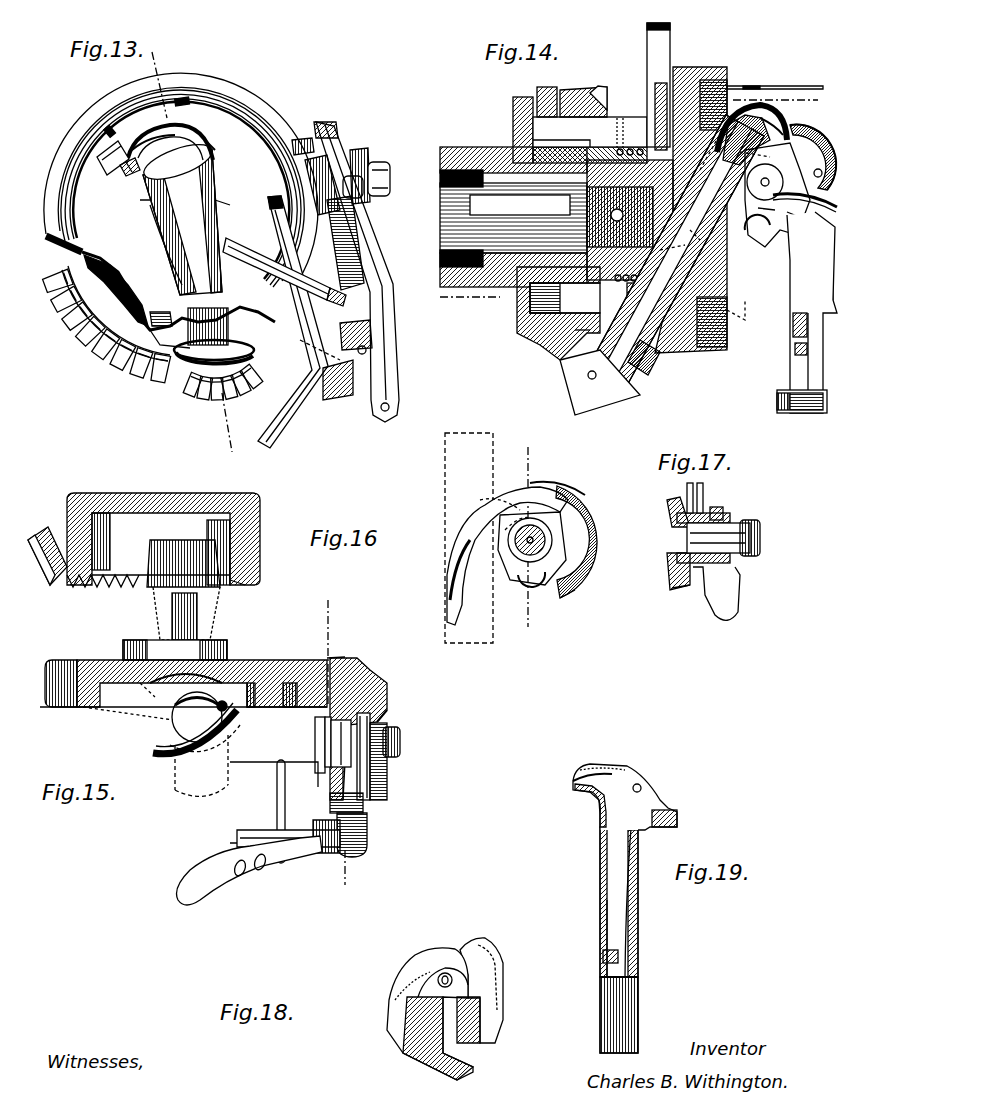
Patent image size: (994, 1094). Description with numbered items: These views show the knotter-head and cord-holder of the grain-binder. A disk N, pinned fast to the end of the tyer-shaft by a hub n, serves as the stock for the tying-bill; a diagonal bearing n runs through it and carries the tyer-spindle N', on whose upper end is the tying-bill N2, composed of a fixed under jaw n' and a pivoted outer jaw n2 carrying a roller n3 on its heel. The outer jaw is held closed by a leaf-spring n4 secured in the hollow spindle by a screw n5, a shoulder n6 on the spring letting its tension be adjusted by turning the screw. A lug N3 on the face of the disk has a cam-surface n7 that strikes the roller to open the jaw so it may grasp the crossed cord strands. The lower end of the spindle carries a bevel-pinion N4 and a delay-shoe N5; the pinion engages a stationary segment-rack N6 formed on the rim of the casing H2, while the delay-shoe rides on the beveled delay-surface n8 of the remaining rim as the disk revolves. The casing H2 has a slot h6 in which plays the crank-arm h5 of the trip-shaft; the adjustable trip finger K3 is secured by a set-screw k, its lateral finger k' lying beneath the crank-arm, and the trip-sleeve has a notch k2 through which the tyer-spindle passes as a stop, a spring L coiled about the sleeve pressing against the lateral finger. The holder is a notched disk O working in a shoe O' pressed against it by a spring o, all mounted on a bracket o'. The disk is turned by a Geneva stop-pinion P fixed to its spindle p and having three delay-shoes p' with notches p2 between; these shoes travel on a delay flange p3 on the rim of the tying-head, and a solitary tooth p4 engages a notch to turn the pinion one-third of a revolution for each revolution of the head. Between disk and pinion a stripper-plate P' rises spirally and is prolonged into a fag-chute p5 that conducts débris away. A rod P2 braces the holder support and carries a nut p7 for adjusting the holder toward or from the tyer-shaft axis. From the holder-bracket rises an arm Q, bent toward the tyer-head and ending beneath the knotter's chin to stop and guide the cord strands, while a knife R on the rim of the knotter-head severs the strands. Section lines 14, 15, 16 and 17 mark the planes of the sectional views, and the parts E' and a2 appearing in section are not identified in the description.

In FIG. 13, the section line 14 is at (120, 80).
In FIG. 14, the section line 15 is at (800, 92).
In FIG. 15, the section line 16 is at (302, 623).
In FIG. 16, the section line 17 is at (550, 455).
In FIG. 13, the disk N is at (186, 192).
In FIG. 14, the disk N is at (622, 206).
In FIG. 15, the disk N is at (186, 675).
In FIG. 15, the tyer-spindle N' is at (175, 637).
In FIG. 19, the tyer-spindle N' is at (632, 940).
In FIG. 13, the tying-bill N2 is at (172, 156).
In FIG. 14, the tying-bill N2 is at (743, 137).
In FIG. 15, the tying-bill N2 is at (199, 717).
In FIG. 19, the tying-bill N2 is at (640, 776).
In FIG. 13, the lug N3 is at (105, 168).
In FIG. 15, the lug N3 is at (140, 714).
In FIG. 13, the bevel-pinion N4 is at (248, 370).
In FIG. 14, the bevel-pinion N4 is at (662, 265).
In FIG. 15, the bevel-pinion N4 is at (147, 597).
In FIG. 13, the delay-shoe N5 is at (240, 345).
In FIG. 14, the delay-shoe N5 is at (645, 362).
In FIG. 13, the segment-rack N6 is at (106, 329).
In FIG. 14, the segment-rack N6 is at (588, 336).
In FIG. 15, the segment-rack N6 is at (83, 565).
In FIG. 13, the hub n is at (182, 222).
In FIG. 15, the hub n is at (186, 688).
In FIG. 13, the fixed under jaw n' is at (132, 167).
In FIG. 14, the fixed under jaw n' is at (755, 159).
In FIG. 15, the fixed under jaw n' is at (183, 728).
In FIG. 13, the pivoted outer jaw n2 is at (140, 145).
In FIG. 14, the pivoted outer jaw n2 is at (778, 124).
In FIG. 15, the pivoted outer jaw n2 is at (205, 760).
In FIG. 19, the pivoted outer jaw n2 is at (595, 766).
In FIG. 13, the roller n3 is at (210, 148).
In FIG. 19, the roller n3 is at (678, 815).
In FIG. 14, the leaf-spring n4 is at (682, 258).
In FIG. 19, the leaf-spring n4 is at (628, 900).
In FIG. 19, the screw n5 is at (603, 958).
In FIG. 19, the shoulder n6 is at (603, 925).
In FIG. 13, the cam-surface n7 is at (130, 165).
In FIG. 15, the cam-surface n7 is at (139, 693).
In FIG. 14, the delay-surface n8 is at (605, 92).
In FIG. 15, the delay-surface n8 is at (250, 584).
In FIG. 13, the Geneva stop-pinion P is at (323, 243).
In FIG. 14, the Geneva stop-pinion P is at (777, 195).
In FIG. 15, the Geneva stop-pinion P is at (337, 760).
In FIG. 16, the Geneva stop-pinion P is at (523, 542).
In FIG. 17, the Geneva stop-pinion P is at (691, 535).
In FIG. 15, the stripper-plate P' is at (358, 728).
In FIG. 16, the stripper-plate P' is at (507, 556).
In FIG. 17, the stripper-plate P' is at (671, 540).
In FIG. 18, the stripper-plate P' is at (445, 1002).
In FIG. 13, the rod P2 is at (320, 285).
In FIG. 13, the spindle p is at (370, 167).
In FIG. 14, the spindle p is at (762, 202).
In FIG. 15, the spindle p is at (395, 743).
In FIG. 17, the spindle p is at (723, 538).
In FIG. 13, the delay-shoes p' is at (309, 185).
In FIG. 15, the delay-shoes p' is at (302, 744).
In FIG. 16, the delay-shoes p' is at (582, 583).
In FIG. 14, the notches p2 is at (765, 228).
In FIG. 16, the notches p2 is at (532, 583).
In FIG. 17, the notches p2 is at (688, 588).
In FIG. 13, the delay flange p3 is at (181, 181).
In FIG. 14, the delay flange p3 is at (720, 353).
In FIG. 15, the delay flange p3 is at (60, 708).
In FIG. 13, the solitary tooth p4 is at (292, 160).
In FIG. 15, the solitary tooth p4 is at (338, 660).
In FIG. 15, the fag-chute p5 is at (380, 690).
In FIG. 18, the fag-chute p5 is at (495, 1043).
In FIG. 15, the nut p7 is at (313, 738).
In FIG. 13, the holder-disk O is at (343, 189).
In FIG. 14, the holder-disk O is at (768, 182).
In FIG. 15, the holder-disk O is at (381, 750).
In FIG. 16, the holder-disk O is at (530, 515).
In FIG. 17, the holder-disk O is at (705, 498).
In FIG. 14, the shoe O' is at (813, 157).
In FIG. 15, the shoe O' is at (370, 795).
In FIG. 16, the shoe O' is at (563, 540).
In FIG. 13, the spring o is at (336, 339).
In FIG. 14, the spring o is at (807, 312).
In FIG. 13, the bracket o' is at (357, 272).
In FIG. 14, the bracket o' is at (753, 256).
In FIG. 15, the bracket o' is at (362, 834).
In FIG. 17, the bracket o' is at (716, 593).
In FIG. 13, the arm Q is at (270, 238).
In FIG. 14, the arm Q is at (805, 207).
In FIG. 15, the arm Q is at (259, 832).
In FIG. 13, the knife R is at (178, 103).
In FIG. 14, the knife R is at (778, 85).
In FIG. 13, the casing H2 is at (125, 232).
In FIG. 14, the casing H2 is at (513, 115).
In FIG. 15, the casing H2 is at (173, 539).
In FIG. 14, the main shaft E' is at (513, 218).
In FIG. 14, the bearing a2 is at (556, 217).
In FIG. 14, the trip finger K3 is at (670, 35).
In FIG. 14, the set-screw k is at (590, 132).
In FIG. 14, the lateral finger k' is at (617, 136).
In FIG. 14, the notch k2 is at (663, 78).
In FIG. 14, the crank-arm h5 is at (538, 99).
In FIG. 14, the slot h6 is at (585, 85).
In FIG. 14, the spring L is at (617, 120).